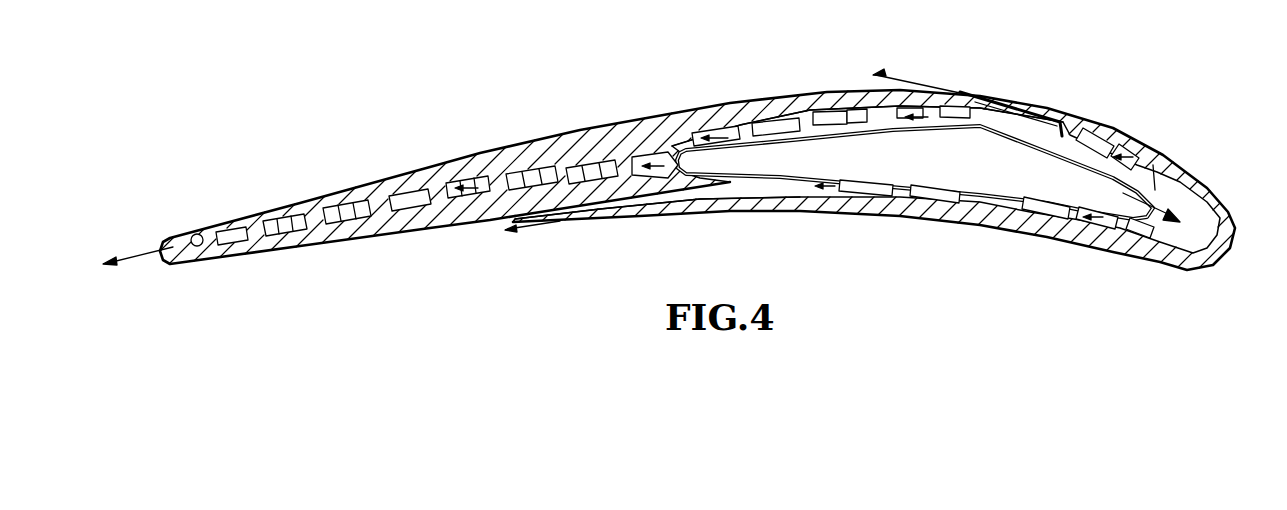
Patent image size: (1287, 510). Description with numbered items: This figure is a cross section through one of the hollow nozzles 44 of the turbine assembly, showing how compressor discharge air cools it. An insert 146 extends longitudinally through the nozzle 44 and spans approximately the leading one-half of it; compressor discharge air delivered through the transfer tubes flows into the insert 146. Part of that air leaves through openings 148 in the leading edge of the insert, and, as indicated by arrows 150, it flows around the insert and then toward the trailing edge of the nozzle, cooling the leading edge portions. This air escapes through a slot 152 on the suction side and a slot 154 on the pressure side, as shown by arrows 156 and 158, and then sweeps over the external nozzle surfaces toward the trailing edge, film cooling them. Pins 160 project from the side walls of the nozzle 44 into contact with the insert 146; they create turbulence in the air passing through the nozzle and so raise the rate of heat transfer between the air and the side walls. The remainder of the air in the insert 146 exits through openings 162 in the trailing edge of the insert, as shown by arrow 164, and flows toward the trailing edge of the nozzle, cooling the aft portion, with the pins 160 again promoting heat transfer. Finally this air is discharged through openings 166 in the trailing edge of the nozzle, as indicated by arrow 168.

The nozzle 44 is at (720, 103).
The insert 146 is at (800, 120).
The openings 148 is at (1157, 202).
The arrows 150 is at (1160, 185).
The slot 152 is at (965, 92).
The slot 154 is at (674, 210).
The arrow 156 is at (960, 93).
The arrow 158 is at (558, 228).
The pins 160 is at (390, 197).
The openings 162 is at (670, 150).
The arrow 164 is at (700, 158).
The openings 166 is at (200, 236).
The arrow 168 is at (140, 255).